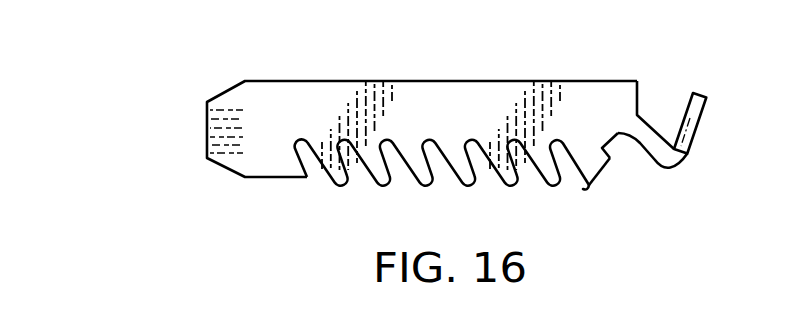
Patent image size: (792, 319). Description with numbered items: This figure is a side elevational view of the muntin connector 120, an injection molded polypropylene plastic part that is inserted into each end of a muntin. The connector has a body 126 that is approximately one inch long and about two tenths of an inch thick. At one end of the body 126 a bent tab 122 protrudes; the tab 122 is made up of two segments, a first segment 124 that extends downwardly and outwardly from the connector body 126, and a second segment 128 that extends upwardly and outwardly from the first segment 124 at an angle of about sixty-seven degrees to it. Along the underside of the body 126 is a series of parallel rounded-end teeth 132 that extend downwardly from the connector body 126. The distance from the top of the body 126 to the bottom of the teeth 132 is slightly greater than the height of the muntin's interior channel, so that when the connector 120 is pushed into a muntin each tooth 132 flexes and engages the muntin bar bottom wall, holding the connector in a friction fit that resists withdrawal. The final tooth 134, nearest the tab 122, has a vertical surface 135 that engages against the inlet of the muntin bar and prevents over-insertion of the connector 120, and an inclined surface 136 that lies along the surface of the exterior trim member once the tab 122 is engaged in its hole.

The connector 120 is at (492, 124).
The bent tab 122 is at (693, 135).
The first segment 124 is at (650, 123).
The body 126 is at (328, 80).
The second segment 128 is at (678, 97).
The teeth 132 is at (348, 188).
The final tooth 134 is at (620, 152).
The vertical surface 135 is at (578, 187).
The inclined surface 136 is at (604, 166).